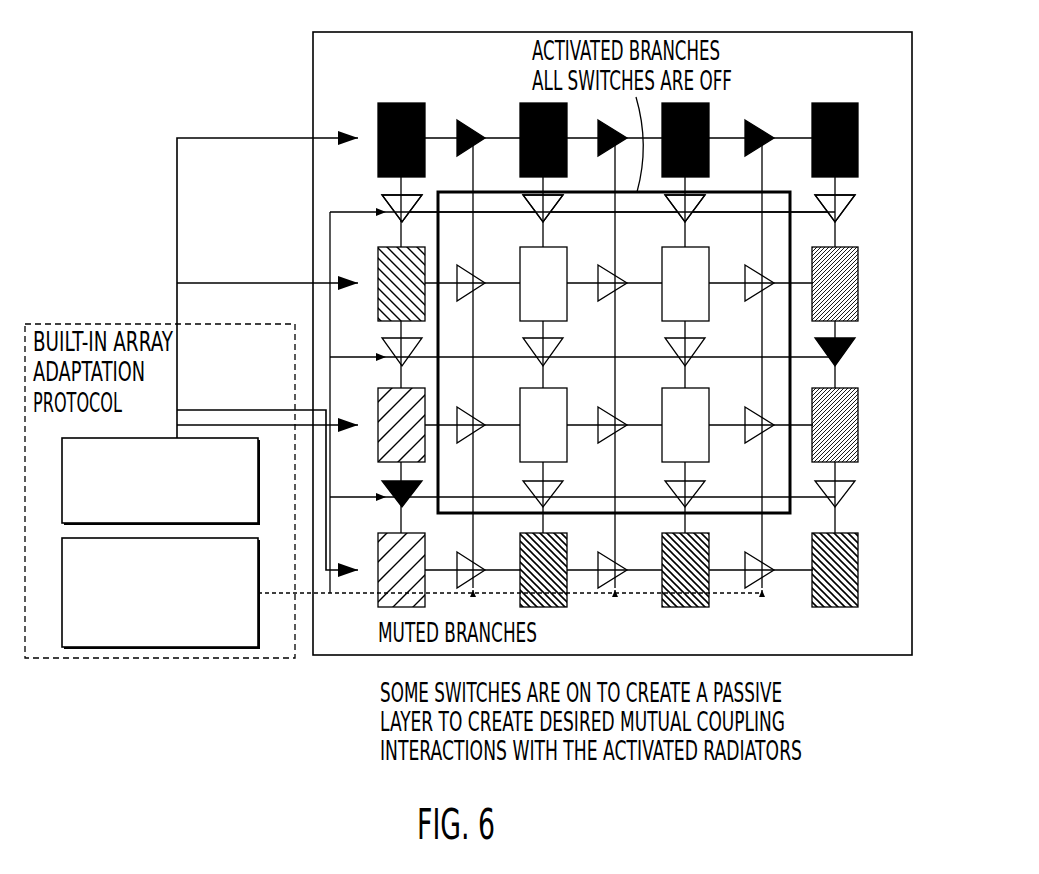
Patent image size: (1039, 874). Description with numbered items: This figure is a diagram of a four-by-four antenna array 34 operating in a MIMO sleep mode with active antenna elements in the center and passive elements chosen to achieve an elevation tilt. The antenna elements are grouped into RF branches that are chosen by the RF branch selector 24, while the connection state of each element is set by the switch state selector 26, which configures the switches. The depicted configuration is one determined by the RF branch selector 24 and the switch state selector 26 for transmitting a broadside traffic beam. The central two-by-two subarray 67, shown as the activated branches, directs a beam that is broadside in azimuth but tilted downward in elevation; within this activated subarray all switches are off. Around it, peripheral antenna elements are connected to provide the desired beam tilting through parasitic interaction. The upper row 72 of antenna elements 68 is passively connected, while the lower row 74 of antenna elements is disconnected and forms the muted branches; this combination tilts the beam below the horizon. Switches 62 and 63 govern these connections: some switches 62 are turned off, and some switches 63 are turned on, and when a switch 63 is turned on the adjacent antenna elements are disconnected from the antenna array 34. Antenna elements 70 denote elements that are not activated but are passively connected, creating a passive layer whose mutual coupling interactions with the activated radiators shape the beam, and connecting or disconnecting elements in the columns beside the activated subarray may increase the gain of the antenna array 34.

The RF branch selector 24 is at (220, 511).
The switch state selector 26 is at (222, 637).
The antenna array 34 is at (901, 69).
The switch 62 is at (768, 568).
The switch 63 is at (850, 352).
The central 2×2 subarray 67 is at (750, 242).
The antenna elements 68 is at (860, 134).
The antenna elements 70 is at (858, 566).
The upper row 72 is at (661, 125).
The lower row 74 is at (661, 550).